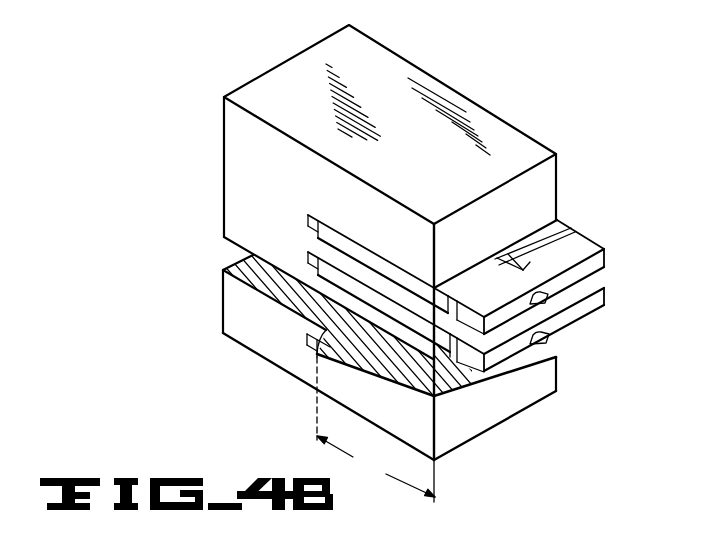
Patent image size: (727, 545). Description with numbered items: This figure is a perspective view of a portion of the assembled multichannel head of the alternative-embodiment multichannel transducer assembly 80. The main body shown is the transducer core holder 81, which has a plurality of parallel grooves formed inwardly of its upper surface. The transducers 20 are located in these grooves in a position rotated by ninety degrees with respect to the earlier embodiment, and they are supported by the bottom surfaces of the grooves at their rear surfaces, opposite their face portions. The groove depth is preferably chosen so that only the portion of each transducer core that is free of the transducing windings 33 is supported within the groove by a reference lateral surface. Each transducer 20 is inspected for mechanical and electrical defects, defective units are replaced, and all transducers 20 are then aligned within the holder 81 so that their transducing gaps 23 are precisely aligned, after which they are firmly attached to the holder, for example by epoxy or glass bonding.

The multichannel transducer assembly 80 is at (426, 263).
The transducer core holder 81 is at (515, 132).
The transducing windings 33 is at (573, 229).
The transducers 20 is at (594, 262).
The transducing gaps 23 is at (547, 323).